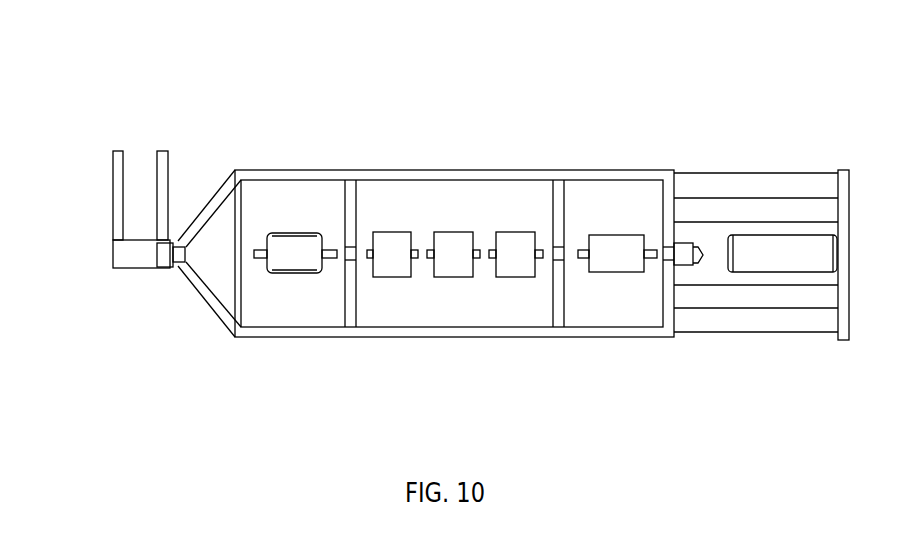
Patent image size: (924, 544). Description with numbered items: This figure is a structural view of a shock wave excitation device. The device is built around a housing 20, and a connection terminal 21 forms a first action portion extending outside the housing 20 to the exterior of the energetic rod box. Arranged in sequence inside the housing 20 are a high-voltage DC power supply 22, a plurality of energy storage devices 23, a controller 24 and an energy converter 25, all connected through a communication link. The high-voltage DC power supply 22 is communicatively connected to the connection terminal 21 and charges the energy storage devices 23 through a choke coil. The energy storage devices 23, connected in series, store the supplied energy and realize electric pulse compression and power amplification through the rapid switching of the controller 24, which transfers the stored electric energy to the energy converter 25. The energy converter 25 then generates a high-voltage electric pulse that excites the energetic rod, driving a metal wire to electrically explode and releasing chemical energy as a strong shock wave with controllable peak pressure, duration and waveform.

The housing 20 is at (628, 430).
The connection terminal 21 is at (127, 311).
The high-voltage DC power supply 22 is at (286, 210).
The energy storage devices 23 is at (450, 202).
The controller 24 is at (617, 211).
The energy converter 25 is at (740, 144).